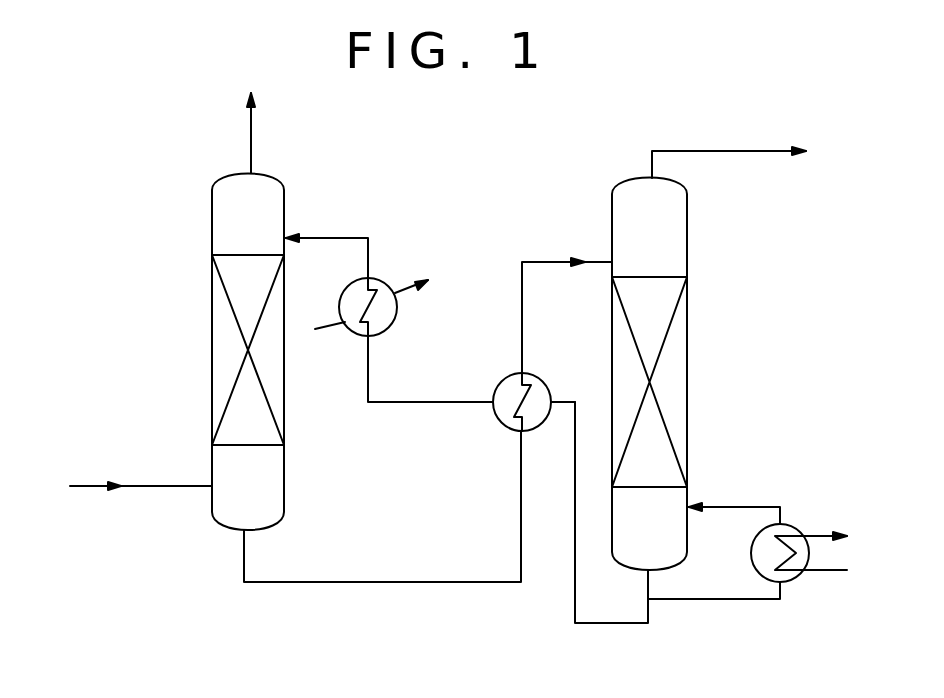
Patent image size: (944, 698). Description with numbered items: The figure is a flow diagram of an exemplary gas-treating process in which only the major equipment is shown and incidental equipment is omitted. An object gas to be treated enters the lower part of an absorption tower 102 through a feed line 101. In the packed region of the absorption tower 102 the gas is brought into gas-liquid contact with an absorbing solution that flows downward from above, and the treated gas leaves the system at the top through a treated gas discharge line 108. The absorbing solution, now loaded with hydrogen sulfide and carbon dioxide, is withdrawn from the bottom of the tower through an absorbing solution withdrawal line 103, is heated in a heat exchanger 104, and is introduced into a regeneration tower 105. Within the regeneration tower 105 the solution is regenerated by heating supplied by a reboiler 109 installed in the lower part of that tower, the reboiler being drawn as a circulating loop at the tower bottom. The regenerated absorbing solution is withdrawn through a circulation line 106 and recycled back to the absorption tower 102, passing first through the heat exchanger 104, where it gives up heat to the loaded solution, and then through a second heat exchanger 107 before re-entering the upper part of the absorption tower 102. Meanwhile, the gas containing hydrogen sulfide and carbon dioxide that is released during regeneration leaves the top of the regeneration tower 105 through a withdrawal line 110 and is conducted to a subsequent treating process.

The feed line 101 is at (101, 488).
The absorption tower 102 is at (212, 345).
The absorbing solution withdrawal line 103 is at (340, 584).
The heat exchanger 104 is at (500, 424).
The regeneration tower 105 is at (687, 370).
The circulation line 106 is at (607, 624).
The heat exchanger 107 is at (392, 326).
The treated gas discharge line 108 is at (251, 138).
The reboiler 109 is at (793, 581).
The withdrawal line 110 is at (748, 153).